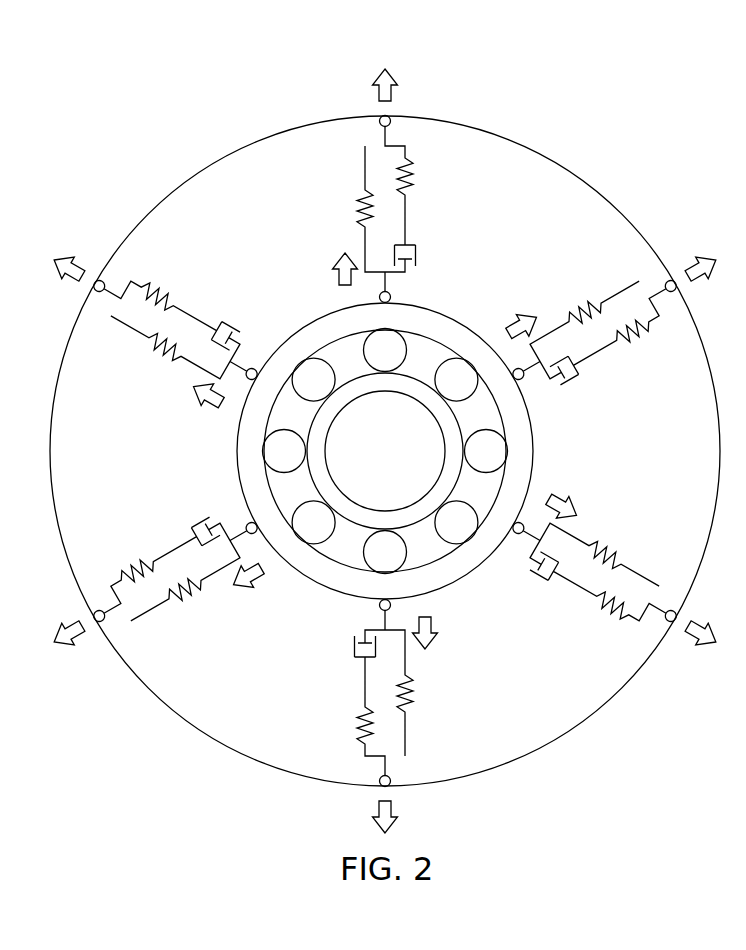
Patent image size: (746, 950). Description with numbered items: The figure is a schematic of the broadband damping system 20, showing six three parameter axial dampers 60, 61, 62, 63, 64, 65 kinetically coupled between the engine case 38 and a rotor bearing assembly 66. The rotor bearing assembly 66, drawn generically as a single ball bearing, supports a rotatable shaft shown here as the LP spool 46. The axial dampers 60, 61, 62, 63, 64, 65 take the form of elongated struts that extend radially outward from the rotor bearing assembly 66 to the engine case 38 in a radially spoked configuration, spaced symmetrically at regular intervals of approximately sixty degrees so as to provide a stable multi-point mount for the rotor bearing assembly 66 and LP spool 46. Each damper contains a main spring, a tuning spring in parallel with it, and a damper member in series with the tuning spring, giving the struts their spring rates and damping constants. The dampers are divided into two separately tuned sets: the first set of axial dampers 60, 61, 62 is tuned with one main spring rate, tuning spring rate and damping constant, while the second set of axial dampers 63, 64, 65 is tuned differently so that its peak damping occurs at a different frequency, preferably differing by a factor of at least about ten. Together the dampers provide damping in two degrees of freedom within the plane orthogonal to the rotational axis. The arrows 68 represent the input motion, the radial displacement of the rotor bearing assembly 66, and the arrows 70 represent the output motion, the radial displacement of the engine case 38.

The broadband damping system 20 is at (172, 146).
The engine case 38 is at (579, 173).
The LP spool 46 is at (400, 468).
The three parameter axial damper 60 is at (362, 151).
The three parameter axial damper 61 is at (656, 582).
The three parameter axial damper 62 is at (143, 622).
The three parameter axial damper 63 is at (630, 280).
The three parameter axial damper 64 is at (410, 752).
The three parameter axial damper 65 is at (112, 316).
The rotor bearing assembly 66 is at (535, 446).
The arrows 68 is at (339, 280).
The arrows 70 is at (379, 93).